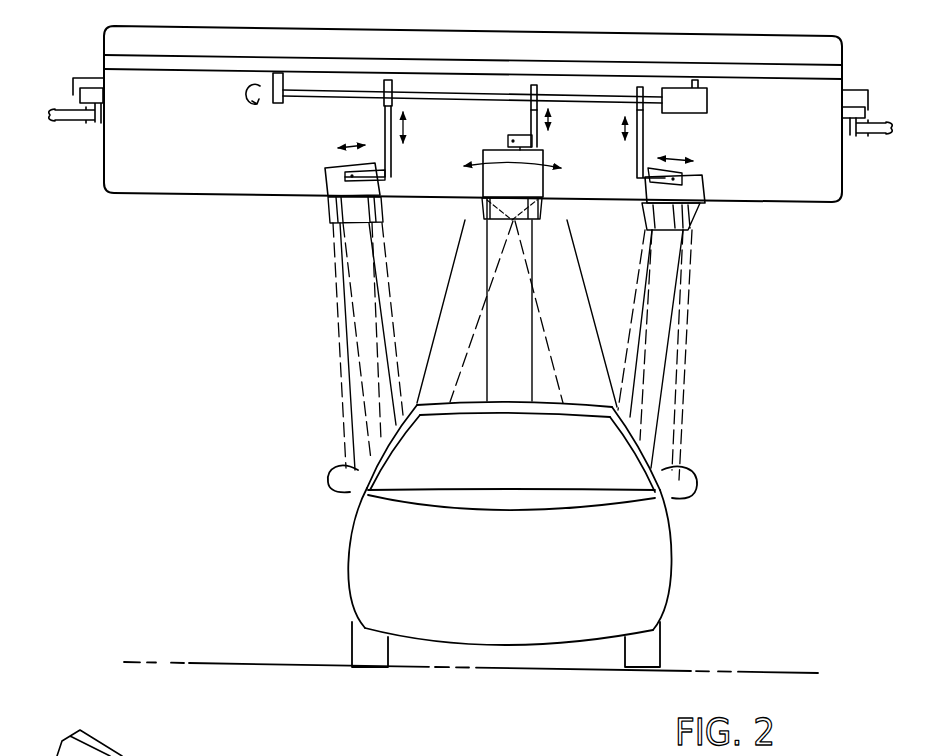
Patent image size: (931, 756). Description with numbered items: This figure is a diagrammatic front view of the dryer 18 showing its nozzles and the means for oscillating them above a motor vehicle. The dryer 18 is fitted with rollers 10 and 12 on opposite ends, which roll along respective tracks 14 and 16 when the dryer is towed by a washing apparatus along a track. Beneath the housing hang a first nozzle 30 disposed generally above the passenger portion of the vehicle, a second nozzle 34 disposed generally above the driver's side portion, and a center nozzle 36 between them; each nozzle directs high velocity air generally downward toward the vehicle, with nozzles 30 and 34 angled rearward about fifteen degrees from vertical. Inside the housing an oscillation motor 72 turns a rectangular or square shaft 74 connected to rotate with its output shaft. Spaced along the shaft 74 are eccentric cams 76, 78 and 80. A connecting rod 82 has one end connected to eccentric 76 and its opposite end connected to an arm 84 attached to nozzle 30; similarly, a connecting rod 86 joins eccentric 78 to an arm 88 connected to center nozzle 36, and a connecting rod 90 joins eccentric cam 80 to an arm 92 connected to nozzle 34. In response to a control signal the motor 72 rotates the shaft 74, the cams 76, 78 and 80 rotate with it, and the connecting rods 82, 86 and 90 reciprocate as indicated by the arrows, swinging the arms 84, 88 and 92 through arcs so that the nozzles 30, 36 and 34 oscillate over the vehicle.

The roller 10 is at (83, 165).
The roller 12 is at (855, 190).
The track 14 is at (76, 137).
The track 16 is at (871, 166).
The dryer 18 is at (228, 204).
The first nozzle 30 is at (326, 190).
The second nozzle 34 is at (698, 212).
The center nozzle 36 is at (525, 186).
The oscillation motor 72 is at (700, 97).
The shaft 74 is at (452, 93).
The eccentric cam 76 is at (389, 80).
The eccentric cam 78 is at (534, 85).
The eccentric cam 80 is at (639, 87).
The connecting rod 82 is at (385, 128).
The arm 84 is at (378, 178).
The connecting rod 86 is at (530, 128).
The arm 88 is at (540, 145).
The connecting rod 90 is at (643, 135).
The arm 92 is at (683, 172).